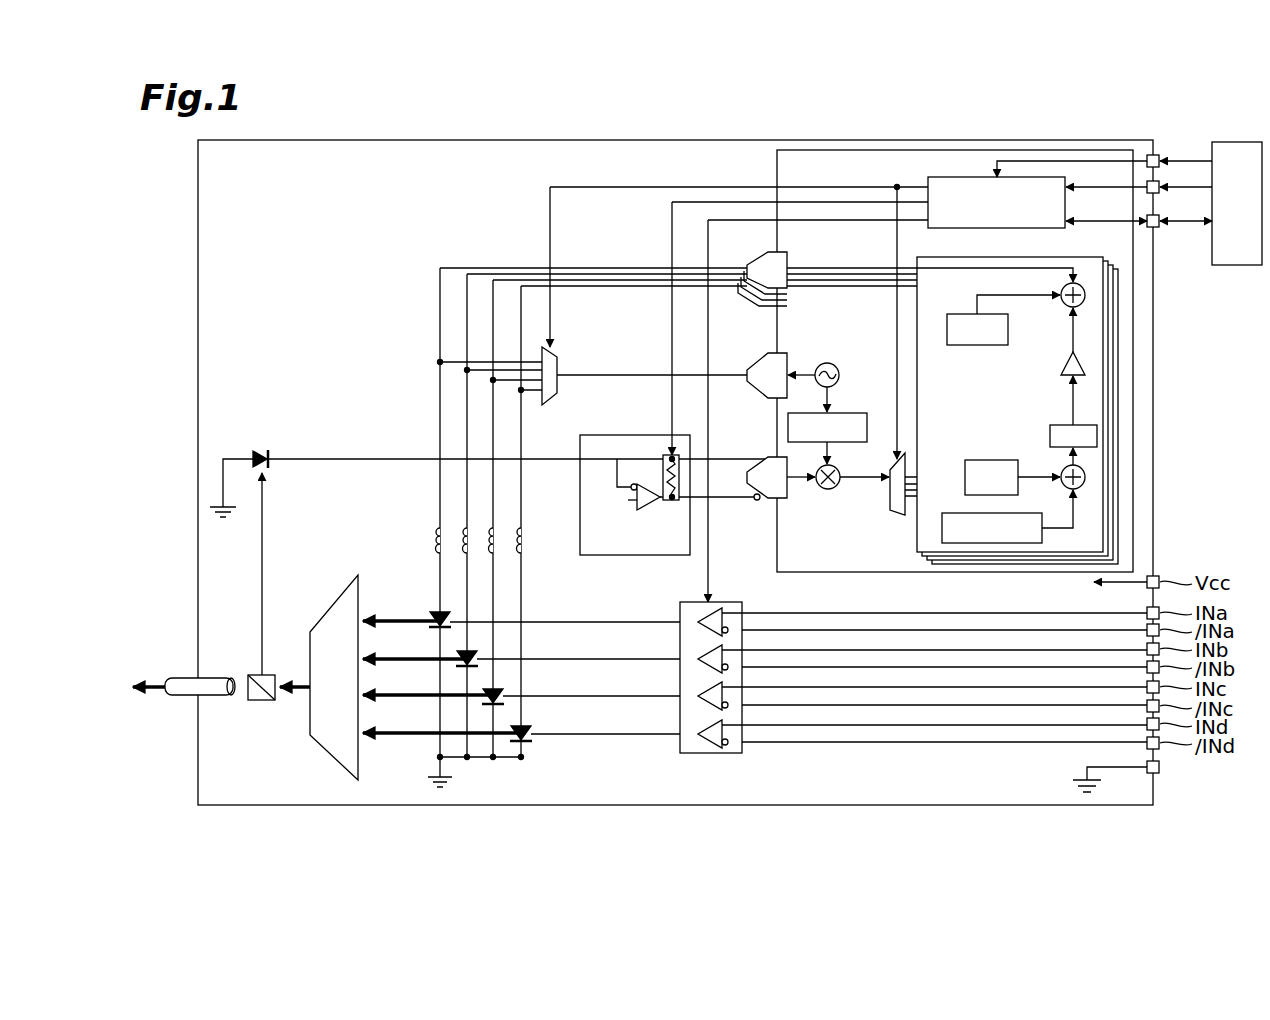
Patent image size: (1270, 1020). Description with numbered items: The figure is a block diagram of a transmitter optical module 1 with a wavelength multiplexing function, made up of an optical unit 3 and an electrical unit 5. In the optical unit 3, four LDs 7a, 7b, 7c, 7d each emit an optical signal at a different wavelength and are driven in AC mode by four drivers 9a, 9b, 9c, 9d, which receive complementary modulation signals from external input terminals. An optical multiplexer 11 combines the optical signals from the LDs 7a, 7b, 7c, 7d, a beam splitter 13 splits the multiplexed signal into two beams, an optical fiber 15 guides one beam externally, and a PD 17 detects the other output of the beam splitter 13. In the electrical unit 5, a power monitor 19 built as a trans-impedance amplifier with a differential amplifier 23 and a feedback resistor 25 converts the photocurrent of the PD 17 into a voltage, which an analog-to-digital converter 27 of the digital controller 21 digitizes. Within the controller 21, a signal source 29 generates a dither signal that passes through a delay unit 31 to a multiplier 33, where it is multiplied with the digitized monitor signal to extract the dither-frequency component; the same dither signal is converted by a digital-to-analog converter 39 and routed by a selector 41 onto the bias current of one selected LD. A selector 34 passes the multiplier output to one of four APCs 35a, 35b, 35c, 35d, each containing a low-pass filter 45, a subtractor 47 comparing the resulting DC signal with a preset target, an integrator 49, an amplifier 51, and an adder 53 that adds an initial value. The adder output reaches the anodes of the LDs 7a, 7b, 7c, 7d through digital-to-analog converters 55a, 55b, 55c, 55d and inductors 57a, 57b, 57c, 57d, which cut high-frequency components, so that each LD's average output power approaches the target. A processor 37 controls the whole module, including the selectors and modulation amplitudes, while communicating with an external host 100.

The transmitter optical module 1 is at (1053, 128).
The optical unit 3 is at (474, 536).
The electrical unit 5 is at (738, 163).
The LD 7a is at (437, 612).
The LD 7b is at (476, 668).
The LD 7c is at (501, 706).
The LD 7d is at (526, 743).
The driver 9a is at (692, 613).
The driver 9b is at (692, 651).
The driver 9c is at (692, 689).
The driver 9d is at (692, 727).
The optical multiplexer 11 is at (339, 600).
The beam splitter 13 is at (258, 703).
The optical fiber 15 is at (218, 676).
The PD 17 is at (258, 450).
The power monitor 19 is at (667, 476).
The digital controller 21 is at (1061, 404).
The differential amplifier 23 is at (652, 511).
The feedback resistor 25 is at (664, 467).
The analog-to-digital converter 27 is at (760, 504).
The signal source 29 is at (834, 365).
The delay unit 31 is at (850, 413).
The multiplier 33 is at (822, 490).
The selector 34 is at (897, 516).
The APC 35a is at (1103, 366).
The APC 35b is at (1108, 396).
The APC 35c is at (1113, 426).
The APC 35d is at (1118, 456).
The processor 37 is at (928, 182).
The digital-to-analog converter 39 is at (759, 398).
The selector 41 is at (557, 366).
The low-pass filter 45 is at (996, 460).
The subtractor 47 is at (1085, 491).
The integrator 49 is at (1060, 425).
The amplifier 51 is at (1060, 360).
The adder 53 is at (1066, 308).
The digital-to-analog converter 55a is at (787, 253).
The digital-to-analog converter 55b is at (795, 294).
The digital-to-analog converter 55c is at (764, 305).
The digital-to-analog converter 55d is at (796, 313).
The inductor 57a is at (437, 542).
The inductor 57b is at (466, 532).
The inductor 57c is at (496, 550).
The inductor 57d is at (524, 546).
The external host 100 is at (1240, 142).